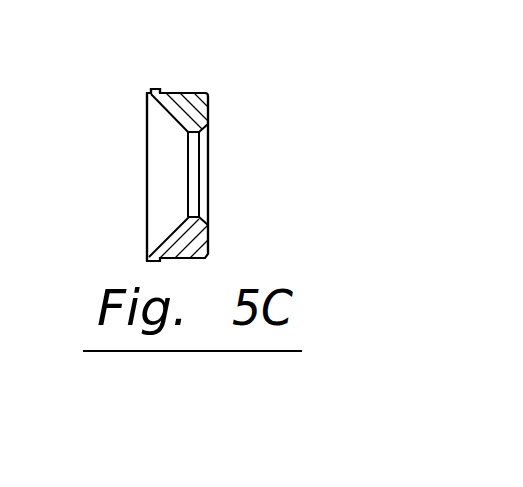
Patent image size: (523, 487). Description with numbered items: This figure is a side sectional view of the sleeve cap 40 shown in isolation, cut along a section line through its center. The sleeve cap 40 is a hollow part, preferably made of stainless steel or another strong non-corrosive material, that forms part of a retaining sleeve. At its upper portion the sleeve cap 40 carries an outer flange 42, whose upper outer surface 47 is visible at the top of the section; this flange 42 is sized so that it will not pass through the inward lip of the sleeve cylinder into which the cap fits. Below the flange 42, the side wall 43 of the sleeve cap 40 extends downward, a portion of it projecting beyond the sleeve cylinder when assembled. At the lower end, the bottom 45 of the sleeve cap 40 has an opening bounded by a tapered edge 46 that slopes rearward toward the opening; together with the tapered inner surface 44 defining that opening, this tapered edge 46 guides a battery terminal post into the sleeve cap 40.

The sleeve cap 40 is at (238, 242).
The flange 42 is at (157, 88).
The side wall 43 is at (195, 92).
The tapered inner surface 44 is at (168, 236).
The bottom 45 is at (209, 107).
The tapered edge 46 is at (200, 131).
The upper outer surface 47 is at (150, 93).